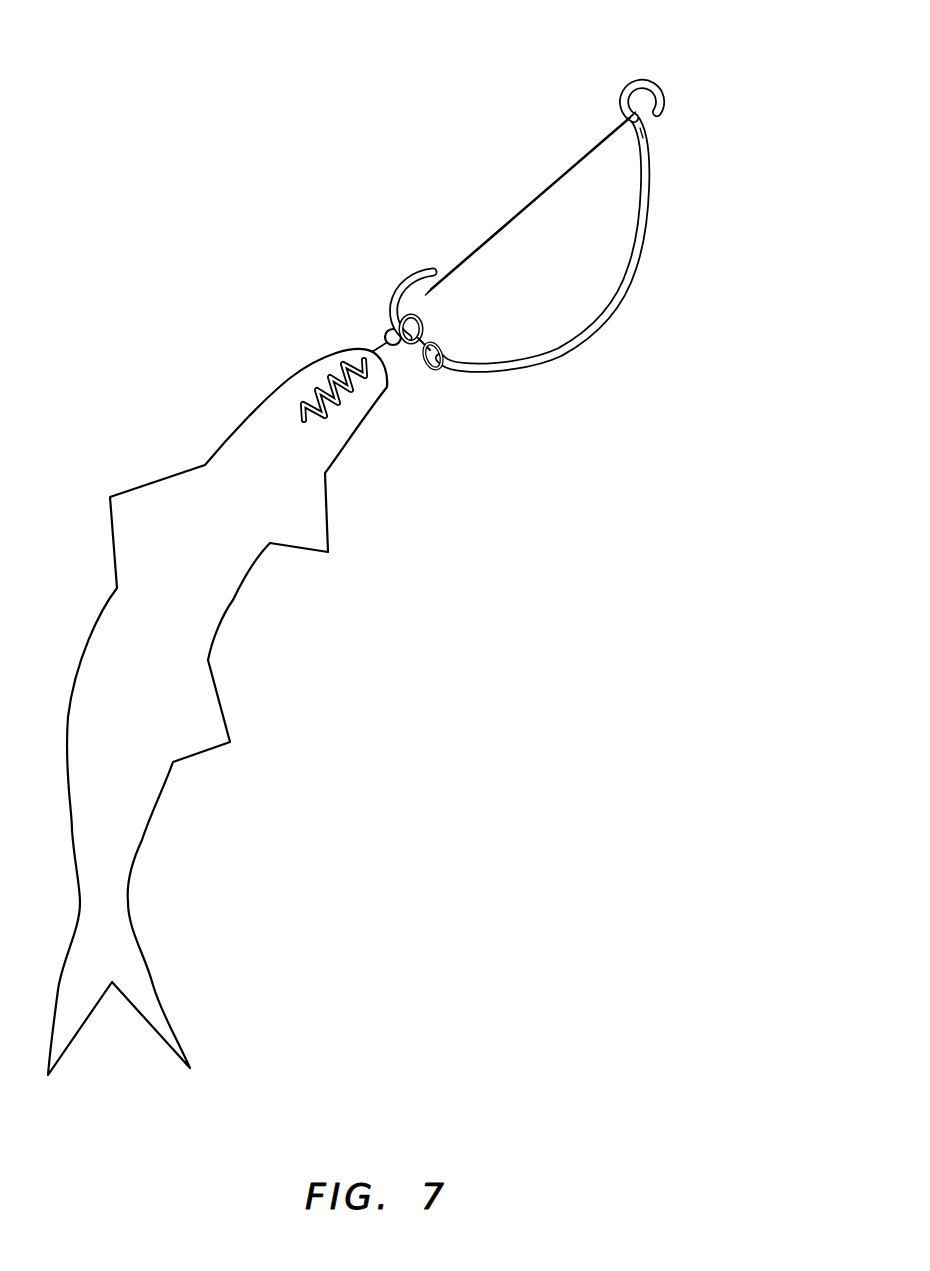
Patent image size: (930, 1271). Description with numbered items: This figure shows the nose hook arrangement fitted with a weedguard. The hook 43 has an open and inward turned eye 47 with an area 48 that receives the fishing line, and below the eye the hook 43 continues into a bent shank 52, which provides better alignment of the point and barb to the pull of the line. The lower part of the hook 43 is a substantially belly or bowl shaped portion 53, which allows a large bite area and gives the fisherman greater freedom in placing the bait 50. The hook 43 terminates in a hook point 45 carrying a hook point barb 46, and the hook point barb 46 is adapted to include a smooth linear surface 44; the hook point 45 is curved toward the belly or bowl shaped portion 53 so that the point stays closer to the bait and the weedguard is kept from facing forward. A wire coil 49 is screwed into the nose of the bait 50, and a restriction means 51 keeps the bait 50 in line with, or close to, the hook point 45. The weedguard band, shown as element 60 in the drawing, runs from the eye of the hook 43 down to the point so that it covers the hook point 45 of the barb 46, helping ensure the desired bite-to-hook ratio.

The hook 43 is at (619, 234).
The smooth linear surface 44 is at (403, 294).
The hook point 45 is at (468, 250).
The hook point barb 46 is at (452, 282).
The open and inward turned eye 47 is at (711, 65).
The area to receive the line 48 is at (668, 100).
The wire coil 49 is at (295, 422).
The bait 50 is at (238, 607).
The restriction means 51 is at (443, 340).
The bent shank 52 is at (660, 130).
The belly or bowl shaped portion 53 is at (533, 373).
The wire leader 60 is at (530, 184).